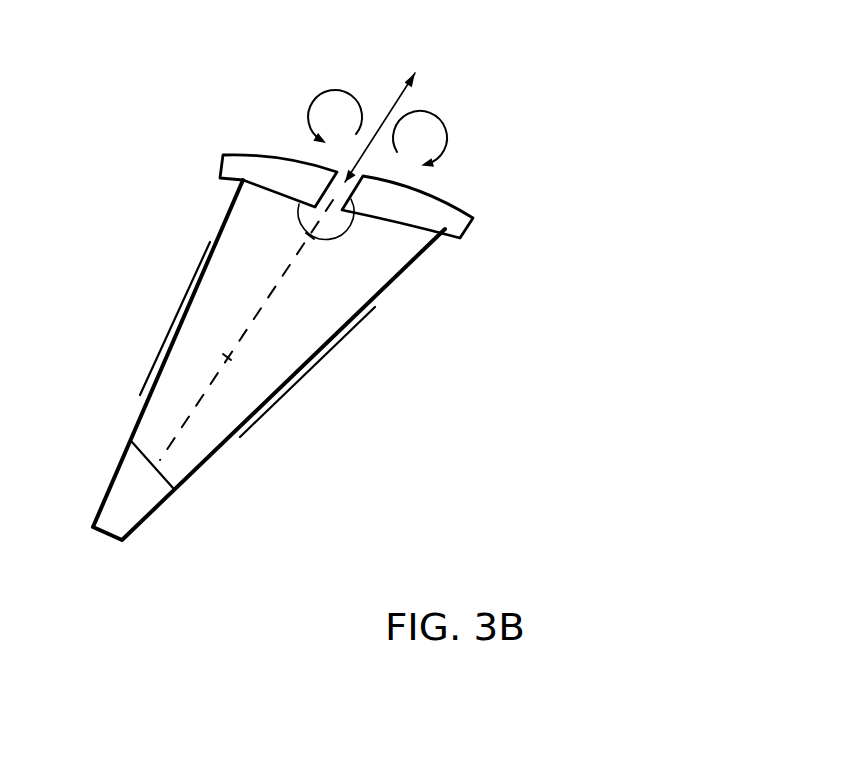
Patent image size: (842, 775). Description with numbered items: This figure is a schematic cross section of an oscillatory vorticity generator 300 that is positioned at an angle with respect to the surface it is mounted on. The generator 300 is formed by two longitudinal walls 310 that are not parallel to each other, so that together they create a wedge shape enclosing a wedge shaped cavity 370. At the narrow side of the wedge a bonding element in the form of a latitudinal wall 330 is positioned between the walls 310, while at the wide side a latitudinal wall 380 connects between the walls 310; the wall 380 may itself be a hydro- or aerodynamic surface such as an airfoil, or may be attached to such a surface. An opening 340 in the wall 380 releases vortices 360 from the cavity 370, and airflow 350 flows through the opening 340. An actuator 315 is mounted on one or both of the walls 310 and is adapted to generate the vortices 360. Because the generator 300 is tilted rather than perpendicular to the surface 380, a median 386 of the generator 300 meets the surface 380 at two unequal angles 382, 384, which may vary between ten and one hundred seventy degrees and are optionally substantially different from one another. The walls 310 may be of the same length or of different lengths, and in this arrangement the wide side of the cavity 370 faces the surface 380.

The oscillatory vorticity generator 300 is at (593, 352).
The longitudinal wall 310 is at (211, 458).
The actuator 315 is at (327, 357).
The latitudinal wall 330 is at (132, 517).
The opening 340 is at (360, 174).
The airflow 350 is at (402, 102).
The vortices 360 is at (450, 130).
The wedge shaped cavity 370 is at (398, 258).
The latitudinal wall 380 is at (253, 165).
The angle 382 is at (338, 237).
The angle 384 is at (300, 211).
The median 386 is at (227, 357).